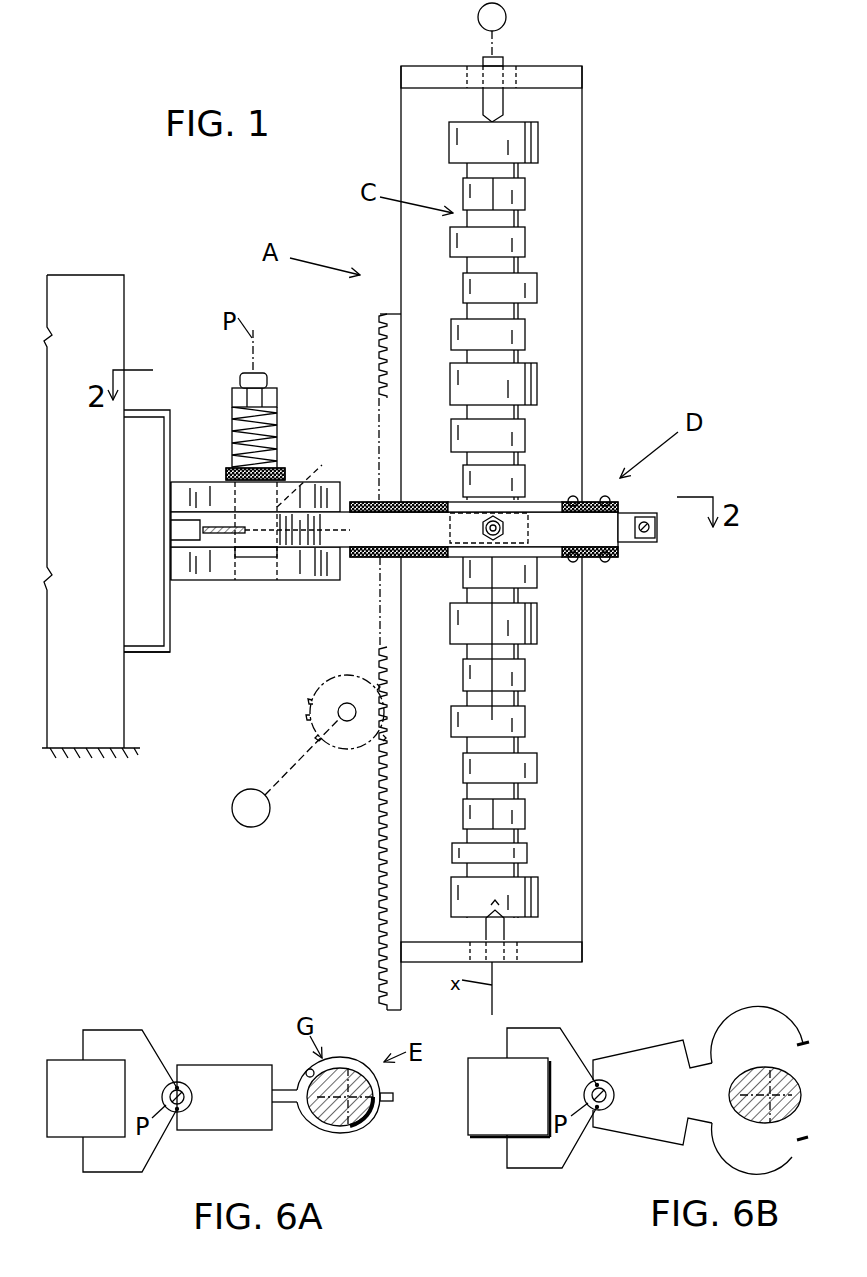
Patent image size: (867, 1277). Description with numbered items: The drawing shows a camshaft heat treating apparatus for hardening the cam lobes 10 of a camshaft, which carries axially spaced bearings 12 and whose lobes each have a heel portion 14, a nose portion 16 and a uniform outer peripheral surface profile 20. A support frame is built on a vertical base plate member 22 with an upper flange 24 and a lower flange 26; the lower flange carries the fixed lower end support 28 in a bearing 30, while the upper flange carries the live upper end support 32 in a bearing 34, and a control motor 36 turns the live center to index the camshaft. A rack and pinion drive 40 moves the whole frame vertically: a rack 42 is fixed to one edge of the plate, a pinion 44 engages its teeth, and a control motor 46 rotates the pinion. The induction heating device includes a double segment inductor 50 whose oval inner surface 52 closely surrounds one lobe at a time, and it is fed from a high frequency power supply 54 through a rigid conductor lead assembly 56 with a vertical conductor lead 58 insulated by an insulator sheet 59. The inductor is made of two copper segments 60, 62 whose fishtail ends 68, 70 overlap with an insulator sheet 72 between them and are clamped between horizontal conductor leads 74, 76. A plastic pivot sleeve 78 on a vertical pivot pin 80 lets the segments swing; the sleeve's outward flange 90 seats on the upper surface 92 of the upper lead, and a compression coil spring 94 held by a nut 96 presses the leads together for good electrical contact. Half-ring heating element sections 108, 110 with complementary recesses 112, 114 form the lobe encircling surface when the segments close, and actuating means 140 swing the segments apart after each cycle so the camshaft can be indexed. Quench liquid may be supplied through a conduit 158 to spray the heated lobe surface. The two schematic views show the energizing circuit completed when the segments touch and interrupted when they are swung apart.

In FIG. 1, the cam lobe 10 is at (515, 195).
In FIG. 6A, the cam lobe 10 is at (360, 1113).
In FIG. 6B, the cam lobe 10 is at (793, 1102).
In FIG. 1, the bearing 12 is at (455, 142).
In FIG. 1, the heel portion 14 is at (522, 240).
In FIG. 1, the nose portion 16 is at (452, 232).
In FIG. 1, the outer peripheral surface profile 20 is at (450, 241).
In FIG. 6A, the outer peripheral surface profile 20 is at (318, 1115).
In FIG. 6B, the outer peripheral surface profile 20 is at (727, 1095).
In FIG. 1, the base plate member 22 is at (575, 808).
In FIG. 1, the upper flange 24 is at (570, 78).
In FIG. 1, the lower flange 26 is at (575, 950).
In FIG. 1, the camshaft lower end support 28 is at (503, 930).
In FIG. 1, the bearing 30 is at (512, 962).
In FIG. 1, the camshaft upper end support 32 is at (498, 105).
In FIG. 1, the bearing 34 is at (475, 68).
In FIG. 1, the control motor 36 is at (508, 17).
In FIG. 1, the rack and pinion drive 40 is at (285, 762).
In FIG. 1, the rack 42 is at (380, 757).
In FIG. 1, the pinion 44 is at (315, 703).
In FIG. 1, the control motor 46 is at (232, 805).
In FIG. 1, the double segment inductor 50 is at (633, 500).
In FIG. 6A, the double segment inductor 50 is at (330, 1135).
In FIG. 6A, the cam lobe encircling inner surface 52 is at (306, 1071).
In FIG. 1, the high frequency power supply 54 is at (123, 322).
In FIG. 6A, the high frequency power supply 54 is at (62, 1058).
In FIG. 6B, the high frequency power supply 54 is at (490, 1056).
In FIG. 1, the conductor lead assembly 56 is at (192, 407).
In FIG. 1, the conductor lead 58 is at (143, 615).
In FIG. 1, the insulator sheet 59 is at (172, 642).
In FIG. 1, the inductor segment 60 is at (484, 529).
In FIG. 6A, the inductor segment 60 is at (223, 1063).
In FIG. 6B, the inductor segment 60 is at (642, 1046).
In FIG. 1, the inductor segment 62 is at (598, 524).
In FIG. 6A, the inductor segment 62 is at (230, 1132).
In FIG. 6B, the inductor segment 62 is at (636, 1136).
In FIG. 1, the fishtail end portion 68 is at (227, 515).
In FIG. 1, the fishtail end portion 70 is at (220, 548).
In FIG. 1, the insulator sheet 72 is at (205, 530).
In FIG. 1, the conductor lead 74 is at (305, 497).
In FIG. 6A, the conductor lead 74 is at (150, 1036).
In FIG. 6B, the conductor lead 74 is at (574, 1040).
In FIG. 1, the conductor lead 76 is at (283, 572).
In FIG. 6A, the conductor lead 76 is at (158, 1150).
In FIG. 6B, the conductor lead 76 is at (574, 1150).
In FIG. 1, the pivot sleeve 78 is at (320, 465).
In FIG. 1, the pivot pin 80 is at (265, 440).
In FIG. 1, the outward flange 90 is at (283, 470).
In FIG. 1, the upper surface 92 is at (187, 482).
In FIG. 1, the compression coil spring 94 is at (272, 425).
In FIG. 1, the nut 96 is at (270, 395).
In FIG. 6A, the inductor heating element section 108 is at (345, 1056).
In FIG. 6B, the inductor heating element section 108 is at (763, 1016).
In FIG. 6A, the inductor heating element section 110 is at (350, 1130).
In FIG. 6B, the inductor heating element section 110 is at (783, 1160).
In FIG. 6B, the cam lobe accommodating recess 112 is at (724, 1040).
In FIG. 6B, the cam lobe accommodating recess 114 is at (722, 1142).
In FIG. 1, the actuating means 140 is at (660, 528).
In FIG. 1, the conduit 158 is at (505, 533).